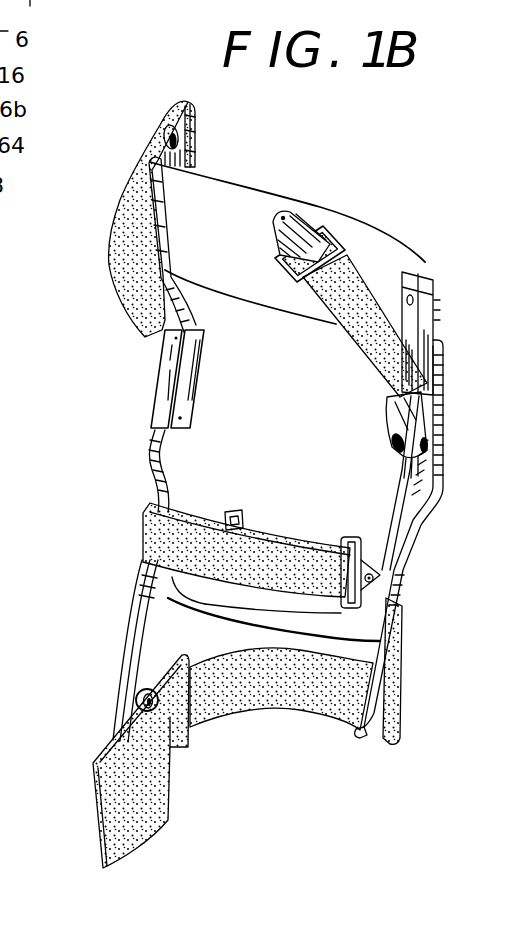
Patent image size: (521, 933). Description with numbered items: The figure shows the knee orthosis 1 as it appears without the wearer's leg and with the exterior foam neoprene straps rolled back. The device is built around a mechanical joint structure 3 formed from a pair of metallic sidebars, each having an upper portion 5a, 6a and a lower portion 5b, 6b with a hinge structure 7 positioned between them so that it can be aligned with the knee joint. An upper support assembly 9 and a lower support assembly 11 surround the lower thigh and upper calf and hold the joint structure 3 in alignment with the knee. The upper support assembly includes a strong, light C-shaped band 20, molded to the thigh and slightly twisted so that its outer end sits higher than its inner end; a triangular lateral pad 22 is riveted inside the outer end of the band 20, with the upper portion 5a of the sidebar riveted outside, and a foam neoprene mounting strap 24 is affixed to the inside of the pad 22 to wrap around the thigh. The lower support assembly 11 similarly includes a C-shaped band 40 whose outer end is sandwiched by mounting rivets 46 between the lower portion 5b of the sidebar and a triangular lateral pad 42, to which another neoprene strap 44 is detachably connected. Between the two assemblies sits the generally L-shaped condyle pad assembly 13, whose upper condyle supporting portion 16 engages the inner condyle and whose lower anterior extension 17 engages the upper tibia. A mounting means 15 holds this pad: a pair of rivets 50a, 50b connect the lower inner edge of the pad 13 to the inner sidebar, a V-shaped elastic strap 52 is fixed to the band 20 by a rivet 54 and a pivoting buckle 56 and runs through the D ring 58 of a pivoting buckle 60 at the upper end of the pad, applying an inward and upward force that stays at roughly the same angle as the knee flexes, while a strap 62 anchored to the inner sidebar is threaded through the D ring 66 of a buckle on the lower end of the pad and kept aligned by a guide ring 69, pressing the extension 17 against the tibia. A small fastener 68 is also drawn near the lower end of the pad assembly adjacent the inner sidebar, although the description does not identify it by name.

The knee orthosis 1 is at (304, 167).
The mechanical joint structure 3 is at (154, 385).
The upper portion of sidebar 5a is at (160, 334).
The lower portion of sidebar 5b is at (150, 457).
The upper portion of sidebar 6a is at (437, 340).
The lower portion of sidebar 6b is at (408, 473).
The hinge structure 7 is at (163, 390).
The upper support assembly 9 is at (99, 211).
The lower support assembly 11 is at (91, 747).
The condyle pad assembly 13 is at (334, 531).
The mounting means 15 is at (385, 442).
The condyle supporting portion 16 is at (258, 484).
The anterior extension 17 is at (208, 600).
The C-shaped band 20 is at (221, 246).
The triangular lateral pad 22 is at (184, 150).
The mounting strap 24 is at (125, 262).
The C-shaped band 40 is at (278, 697).
The triangular lateral pad 42 is at (137, 697).
The strap 44 is at (108, 778).
The mounting rivets 46 is at (143, 716).
The rivet 50a is at (402, 565).
The rivet 50b is at (400, 612).
The V-shaped elastic strap 52 is at (318, 318).
The rivet 54 is at (418, 258).
The pivoting buckle 56 is at (303, 218).
The D ring 58 is at (383, 400).
The pivoting buckle 60 is at (393, 430).
The strap 62 is at (257, 547).
The D ring 66 is at (333, 612).
The fastener bolt 68 is at (397, 590).
The guide ring 69 is at (230, 512).